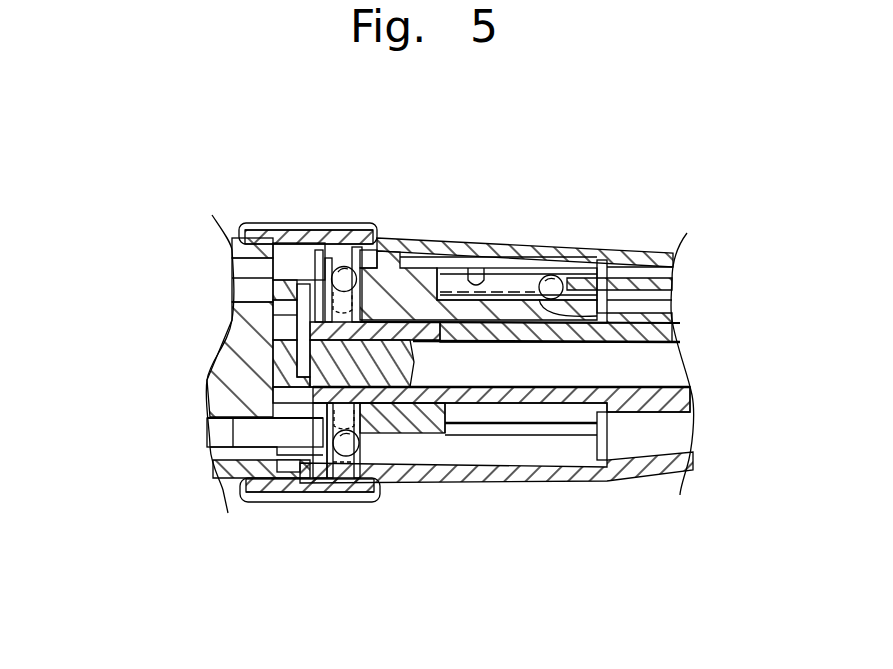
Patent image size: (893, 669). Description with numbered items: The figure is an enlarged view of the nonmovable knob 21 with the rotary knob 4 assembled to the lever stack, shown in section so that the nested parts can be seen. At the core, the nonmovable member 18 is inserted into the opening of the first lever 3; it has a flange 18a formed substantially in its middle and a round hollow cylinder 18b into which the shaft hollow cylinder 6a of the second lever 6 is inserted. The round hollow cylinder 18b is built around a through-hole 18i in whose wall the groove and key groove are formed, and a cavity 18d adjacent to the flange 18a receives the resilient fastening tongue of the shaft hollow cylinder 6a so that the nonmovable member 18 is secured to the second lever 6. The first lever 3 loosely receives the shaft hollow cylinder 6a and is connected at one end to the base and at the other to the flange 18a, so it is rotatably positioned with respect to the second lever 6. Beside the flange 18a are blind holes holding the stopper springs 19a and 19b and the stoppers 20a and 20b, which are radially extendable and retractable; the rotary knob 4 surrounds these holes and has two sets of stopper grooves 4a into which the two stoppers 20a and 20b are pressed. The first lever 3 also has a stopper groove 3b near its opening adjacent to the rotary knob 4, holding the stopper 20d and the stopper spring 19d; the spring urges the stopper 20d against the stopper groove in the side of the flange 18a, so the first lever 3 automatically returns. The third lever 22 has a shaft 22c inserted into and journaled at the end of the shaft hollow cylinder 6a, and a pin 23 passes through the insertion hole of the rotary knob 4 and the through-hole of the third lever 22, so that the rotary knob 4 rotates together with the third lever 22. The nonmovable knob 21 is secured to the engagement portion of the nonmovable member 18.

The first lever 3 is at (633, 470).
The stopper groove 3b is at (622, 262).
The rotary knob 4 is at (305, 224).
The stopper grooves 4a is at (341, 236).
The second lever 6 is at (660, 412).
The shaft hollow cylinder 6a is at (440, 400).
The nonmovable member 18 is at (448, 237).
The flange 18a is at (396, 240).
The round hollow cylinder 18b is at (568, 410).
The cavity 18d is at (283, 265).
The through-hole 18i is at (640, 328).
The stopper spring 19a is at (320, 490).
The stopper spring 19b is at (275, 308).
The stopper spring 19d is at (483, 273).
The stopper 20a is at (323, 490).
The stopper 20b is at (293, 236).
The stopper 20d is at (556, 275).
The nonmovable knob 21 is at (227, 492).
The third lever 22 is at (670, 373).
The shaft 22c is at (500, 365).
The pin 23 is at (300, 335).